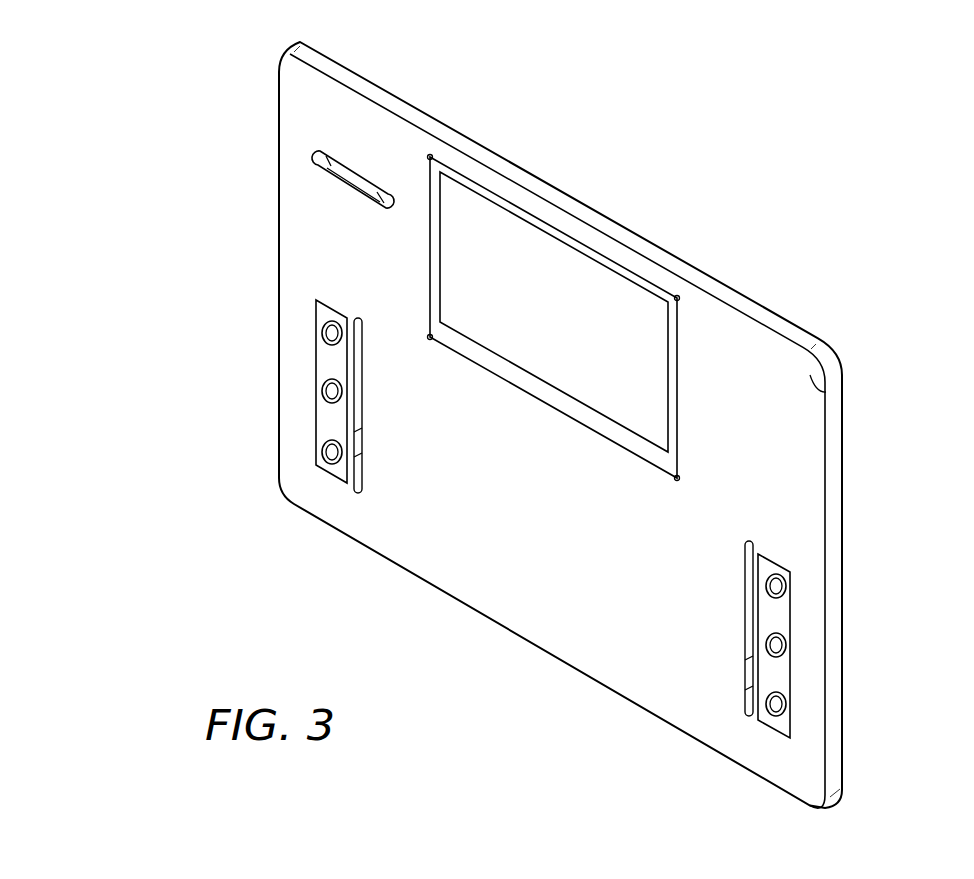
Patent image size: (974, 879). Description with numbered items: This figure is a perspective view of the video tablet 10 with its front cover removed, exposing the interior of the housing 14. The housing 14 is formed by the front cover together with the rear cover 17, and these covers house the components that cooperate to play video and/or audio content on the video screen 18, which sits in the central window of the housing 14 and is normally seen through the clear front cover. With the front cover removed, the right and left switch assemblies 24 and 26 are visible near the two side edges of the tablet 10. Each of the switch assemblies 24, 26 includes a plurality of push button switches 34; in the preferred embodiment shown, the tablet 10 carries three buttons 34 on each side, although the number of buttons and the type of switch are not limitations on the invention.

The video tablet 10 is at (852, 180).
The housing 14 is at (826, 392).
The rear cover 17 is at (843, 431).
The video screen 18 is at (586, 325).
The right switch assembly 24 is at (758, 718).
The left switch assembly 26 is at (323, 463).
The push button switches 34 is at (332, 333).